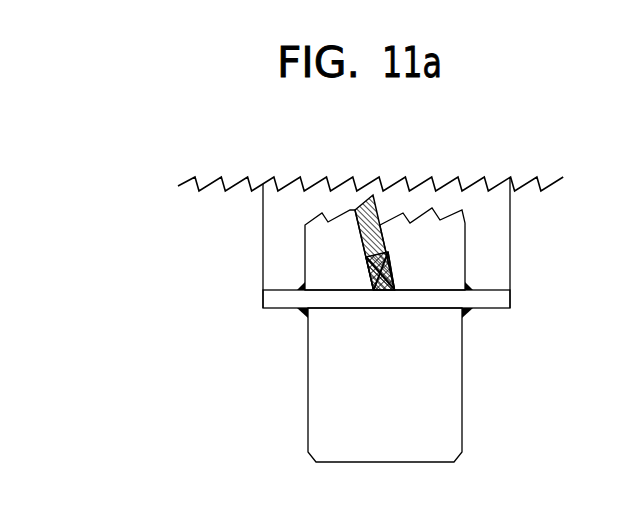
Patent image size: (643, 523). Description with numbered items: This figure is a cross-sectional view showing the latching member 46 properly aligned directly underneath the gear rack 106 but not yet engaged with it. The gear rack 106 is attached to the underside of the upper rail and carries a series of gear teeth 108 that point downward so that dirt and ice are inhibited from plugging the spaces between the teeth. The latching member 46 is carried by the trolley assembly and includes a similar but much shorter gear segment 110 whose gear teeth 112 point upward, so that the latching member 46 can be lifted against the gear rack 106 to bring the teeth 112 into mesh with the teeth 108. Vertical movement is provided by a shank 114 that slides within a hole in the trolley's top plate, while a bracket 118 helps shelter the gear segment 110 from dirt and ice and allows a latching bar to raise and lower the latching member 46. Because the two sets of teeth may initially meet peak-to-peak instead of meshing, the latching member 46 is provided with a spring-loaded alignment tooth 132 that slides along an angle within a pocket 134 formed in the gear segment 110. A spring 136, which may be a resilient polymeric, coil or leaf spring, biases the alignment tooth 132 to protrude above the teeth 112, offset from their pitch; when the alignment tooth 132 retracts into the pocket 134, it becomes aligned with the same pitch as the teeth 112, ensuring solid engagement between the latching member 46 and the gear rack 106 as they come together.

The latching member 46 is at (378, 320).
The gear rack 106 is at (528, 150).
The gear teeth 108 is at (200, 190).
The gear segment 110 is at (305, 263).
The gear teeth 112 is at (465, 210).
The shank 114 is at (307, 378).
The bracket 118 is at (488, 308).
The alignment tooth 132 is at (357, 198).
The pocket 134 is at (397, 276).
The spring 136 is at (380, 275).